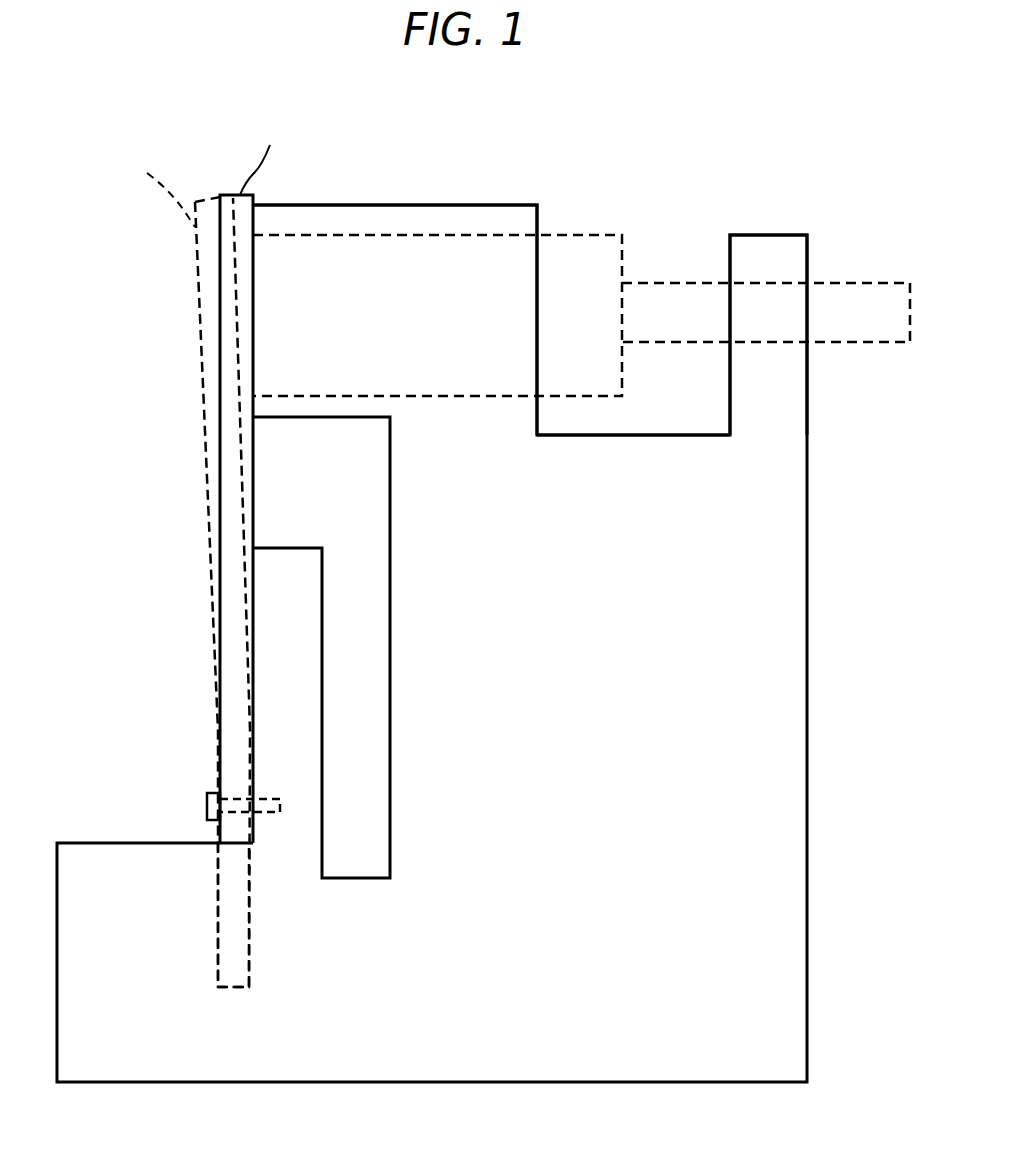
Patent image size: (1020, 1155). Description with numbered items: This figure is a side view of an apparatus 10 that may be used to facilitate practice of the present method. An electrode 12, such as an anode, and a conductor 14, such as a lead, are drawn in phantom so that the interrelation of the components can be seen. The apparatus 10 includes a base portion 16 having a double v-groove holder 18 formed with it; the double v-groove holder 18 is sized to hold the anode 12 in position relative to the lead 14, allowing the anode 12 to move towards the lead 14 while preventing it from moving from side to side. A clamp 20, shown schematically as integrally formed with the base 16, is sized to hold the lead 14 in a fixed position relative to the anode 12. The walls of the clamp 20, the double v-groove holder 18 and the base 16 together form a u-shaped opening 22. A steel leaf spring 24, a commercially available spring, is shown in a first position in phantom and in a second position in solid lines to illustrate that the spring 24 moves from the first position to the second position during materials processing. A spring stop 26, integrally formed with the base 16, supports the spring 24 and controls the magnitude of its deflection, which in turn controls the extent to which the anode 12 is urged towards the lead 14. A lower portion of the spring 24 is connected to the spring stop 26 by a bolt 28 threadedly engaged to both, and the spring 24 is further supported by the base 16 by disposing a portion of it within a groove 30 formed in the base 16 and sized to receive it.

The apparatus 10 is at (698, 115).
The electrode 12 is at (560, 235).
The conductor 14 is at (840, 283).
The base portion 16 is at (808, 800).
The double v-groove holder 18 is at (418, 205).
The clamp 20 is at (763, 235).
The u-shaped opening 22 is at (655, 435).
The steel leaf spring 24 is at (218, 733).
The spring stop 26 is at (323, 728).
The bolt 28 is at (207, 806).
The groove 30 is at (250, 913).